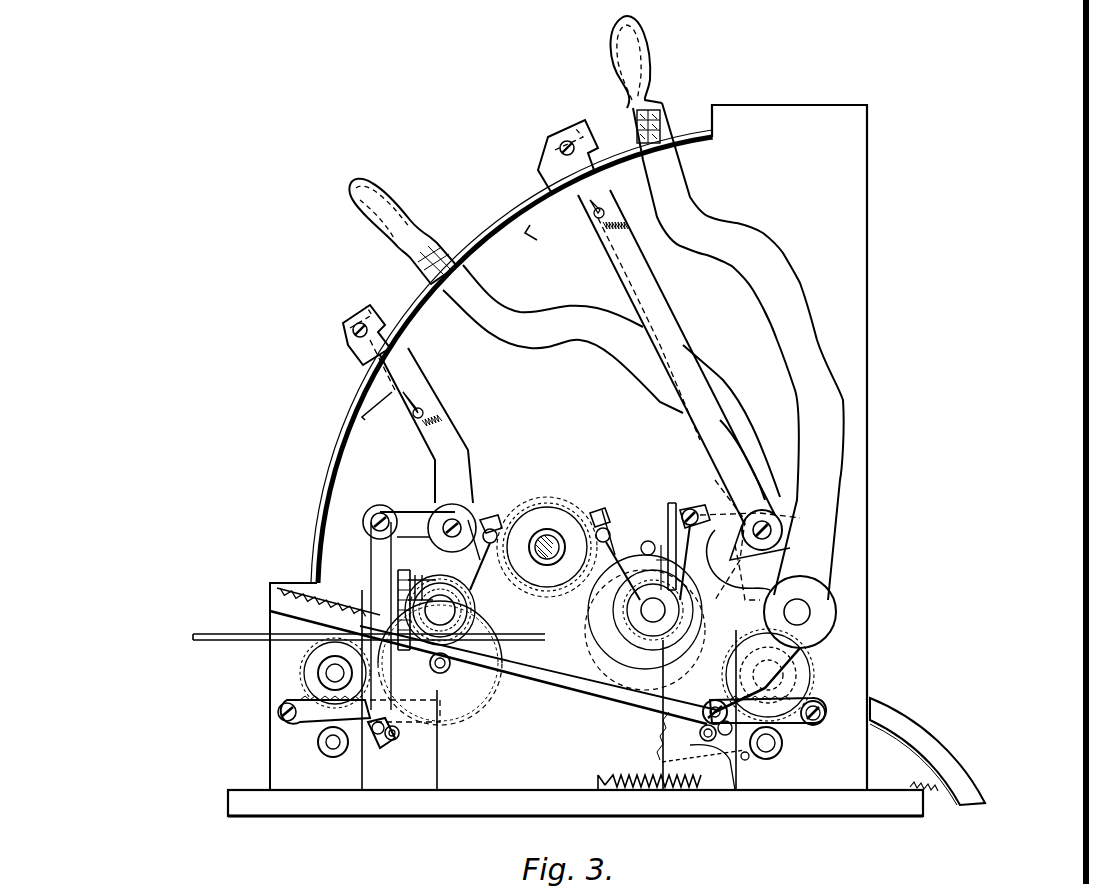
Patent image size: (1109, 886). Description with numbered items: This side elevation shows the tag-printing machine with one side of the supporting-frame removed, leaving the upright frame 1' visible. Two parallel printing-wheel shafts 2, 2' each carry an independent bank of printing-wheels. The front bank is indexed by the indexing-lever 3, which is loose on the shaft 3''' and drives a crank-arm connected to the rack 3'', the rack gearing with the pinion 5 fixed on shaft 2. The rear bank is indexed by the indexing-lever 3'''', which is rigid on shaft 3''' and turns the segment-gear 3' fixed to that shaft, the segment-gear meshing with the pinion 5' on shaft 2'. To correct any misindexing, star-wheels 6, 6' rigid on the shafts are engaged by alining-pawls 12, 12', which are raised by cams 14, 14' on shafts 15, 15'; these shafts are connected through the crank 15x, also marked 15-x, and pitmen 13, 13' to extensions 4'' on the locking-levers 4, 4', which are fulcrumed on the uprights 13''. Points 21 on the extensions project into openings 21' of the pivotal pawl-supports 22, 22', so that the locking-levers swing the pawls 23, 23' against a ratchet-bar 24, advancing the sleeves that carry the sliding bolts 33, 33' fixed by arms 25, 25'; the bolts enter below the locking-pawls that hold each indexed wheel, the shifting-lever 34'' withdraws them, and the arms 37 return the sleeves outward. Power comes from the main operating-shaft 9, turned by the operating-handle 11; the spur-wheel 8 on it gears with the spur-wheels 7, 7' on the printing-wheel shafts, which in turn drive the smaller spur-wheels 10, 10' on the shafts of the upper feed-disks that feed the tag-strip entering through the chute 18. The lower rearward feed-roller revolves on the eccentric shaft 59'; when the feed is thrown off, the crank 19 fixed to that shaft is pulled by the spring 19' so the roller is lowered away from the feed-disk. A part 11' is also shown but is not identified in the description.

The upright frame 1' is at (575, 460).
The printing-wheel shaft 2 is at (440, 610).
The printing-wheel shaft 2' is at (653, 610).
The indexing-lever 3 is at (726, 332).
The segment-gear 3' is at (749, 540).
The rack 3'' is at (535, 656).
The shaft 3''' is at (843, 611).
The indexing-lever 3'''' is at (564, 417).
The locking-lever 4 is at (408, 404).
The locking-lever 4' is at (656, 322).
The extension 4'' is at (581, 521).
The pinion 5 is at (448, 610).
The pinion 5' is at (650, 610).
The star-wheel 6 is at (426, 601).
The star-wheel 6' is at (645, 612).
The spur-wheel 7 is at (440, 663).
The spur-wheel 7' is at (626, 630).
The spur-wheel 8 is at (544, 544).
The main operating-shaft 9 is at (552, 538).
The spur-wheel 10 is at (326, 669).
The spur-wheel 10' is at (800, 675).
The operating-handle 11 is at (302, 674).
The gear 11' is at (790, 675).
The alining-pawl 12 is at (385, 714).
The alining-pawl 12' is at (774, 723).
The pitman 13 is at (358, 611).
The pitman 13' is at (748, 511).
The upright 13'' is at (549, 690).
The cam 14 is at (400, 733).
The cam 14' is at (665, 737).
The shaft 15 is at (402, 745).
The shaft 15' is at (698, 736).
The crank 15x is at (355, 744).
The crank 15-x is at (745, 760).
The chute 18 is at (942, 748).
The crank 19 is at (701, 751).
The spring 19' is at (646, 793).
The point 21 is at (660, 527).
The opening 21' is at (646, 567).
The pawl-support 22 is at (414, 584).
The pawl-support 22' is at (691, 532).
The pawl 23 is at (451, 517).
The pawl 23' is at (640, 526).
The ratchet-bar 24 is at (425, 610).
The arm 25 is at (487, 533).
The arm 25' is at (615, 540).
The sliding bolt 33 is at (484, 498).
The sliding bolt 33' is at (604, 503).
The shifting-lever 34'' is at (369, 616).
The arm 37 is at (520, 580).
The eccentric shaft 59' is at (787, 752).